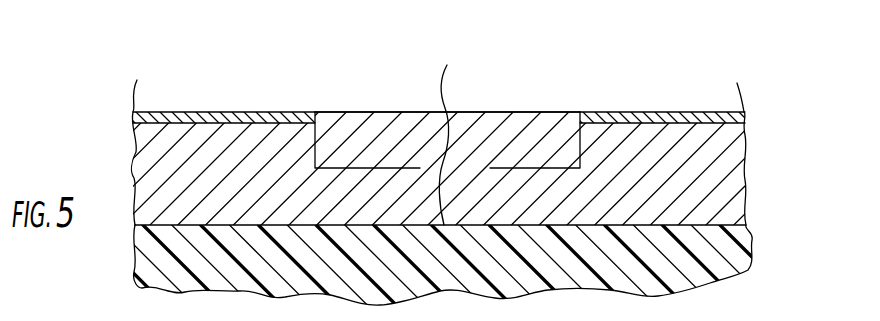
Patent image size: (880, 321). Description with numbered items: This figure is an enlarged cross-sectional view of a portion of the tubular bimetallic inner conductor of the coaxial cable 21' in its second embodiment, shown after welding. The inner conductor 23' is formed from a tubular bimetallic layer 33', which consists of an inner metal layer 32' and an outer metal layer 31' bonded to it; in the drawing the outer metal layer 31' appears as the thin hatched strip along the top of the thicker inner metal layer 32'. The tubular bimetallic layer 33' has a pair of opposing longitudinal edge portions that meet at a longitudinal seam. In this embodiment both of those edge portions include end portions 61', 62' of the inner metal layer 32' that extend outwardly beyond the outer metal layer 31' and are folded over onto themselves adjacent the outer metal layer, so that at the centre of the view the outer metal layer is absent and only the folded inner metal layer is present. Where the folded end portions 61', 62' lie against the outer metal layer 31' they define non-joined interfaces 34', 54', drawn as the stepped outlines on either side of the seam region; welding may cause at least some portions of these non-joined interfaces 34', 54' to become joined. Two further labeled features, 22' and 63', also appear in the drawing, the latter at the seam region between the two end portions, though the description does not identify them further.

The coaxial cable 21' is at (432, 171).
The substrate 22' is at (428, 244).
The inner conductor 23' is at (439, 65).
The outer metal layer 31' is at (451, 65).
The inner metal layer 32' is at (443, 168).
The tubular bimetallic layer 33' is at (110, 152).
The non-joined interface 34' is at (348, 113).
The non-joined interface 54' is at (550, 110).
The end portion 61' is at (380, 82).
The end portion 62' is at (512, 82).
The break line 63' is at (464, 139).